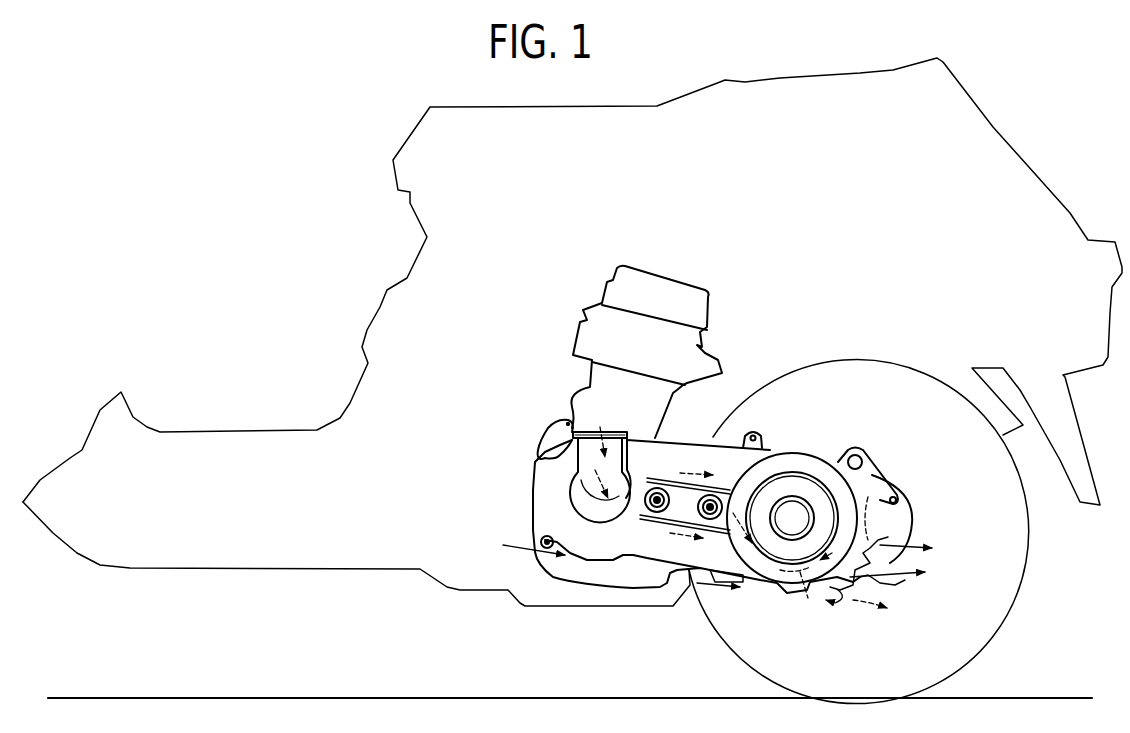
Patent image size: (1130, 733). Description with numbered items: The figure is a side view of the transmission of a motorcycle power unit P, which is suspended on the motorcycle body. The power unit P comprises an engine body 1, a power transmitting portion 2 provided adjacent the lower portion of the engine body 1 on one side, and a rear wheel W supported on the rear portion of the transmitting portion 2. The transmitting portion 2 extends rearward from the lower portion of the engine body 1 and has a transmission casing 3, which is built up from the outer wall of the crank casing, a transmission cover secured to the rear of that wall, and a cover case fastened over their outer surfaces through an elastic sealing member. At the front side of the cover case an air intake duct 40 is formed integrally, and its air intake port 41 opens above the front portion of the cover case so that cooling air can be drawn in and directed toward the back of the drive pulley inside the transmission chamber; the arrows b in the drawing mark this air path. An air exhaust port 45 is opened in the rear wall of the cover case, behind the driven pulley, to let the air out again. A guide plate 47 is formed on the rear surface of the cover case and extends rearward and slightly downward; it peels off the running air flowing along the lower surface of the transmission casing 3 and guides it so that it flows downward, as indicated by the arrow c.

The engine body 1 is at (661, 407).
The power transmitting portion 2 is at (713, 437).
The transmission casing 3 is at (733, 456).
The air intake duct 40 is at (622, 468).
The air intake port 41 is at (613, 432).
The air exhaust port 45 is at (890, 537).
The guide plate 47 is at (855, 583).
The power unit P is at (723, 445).
The rear wheel W is at (853, 353).
The cooling air flow b is at (597, 430).
The arrow c is at (792, 603).